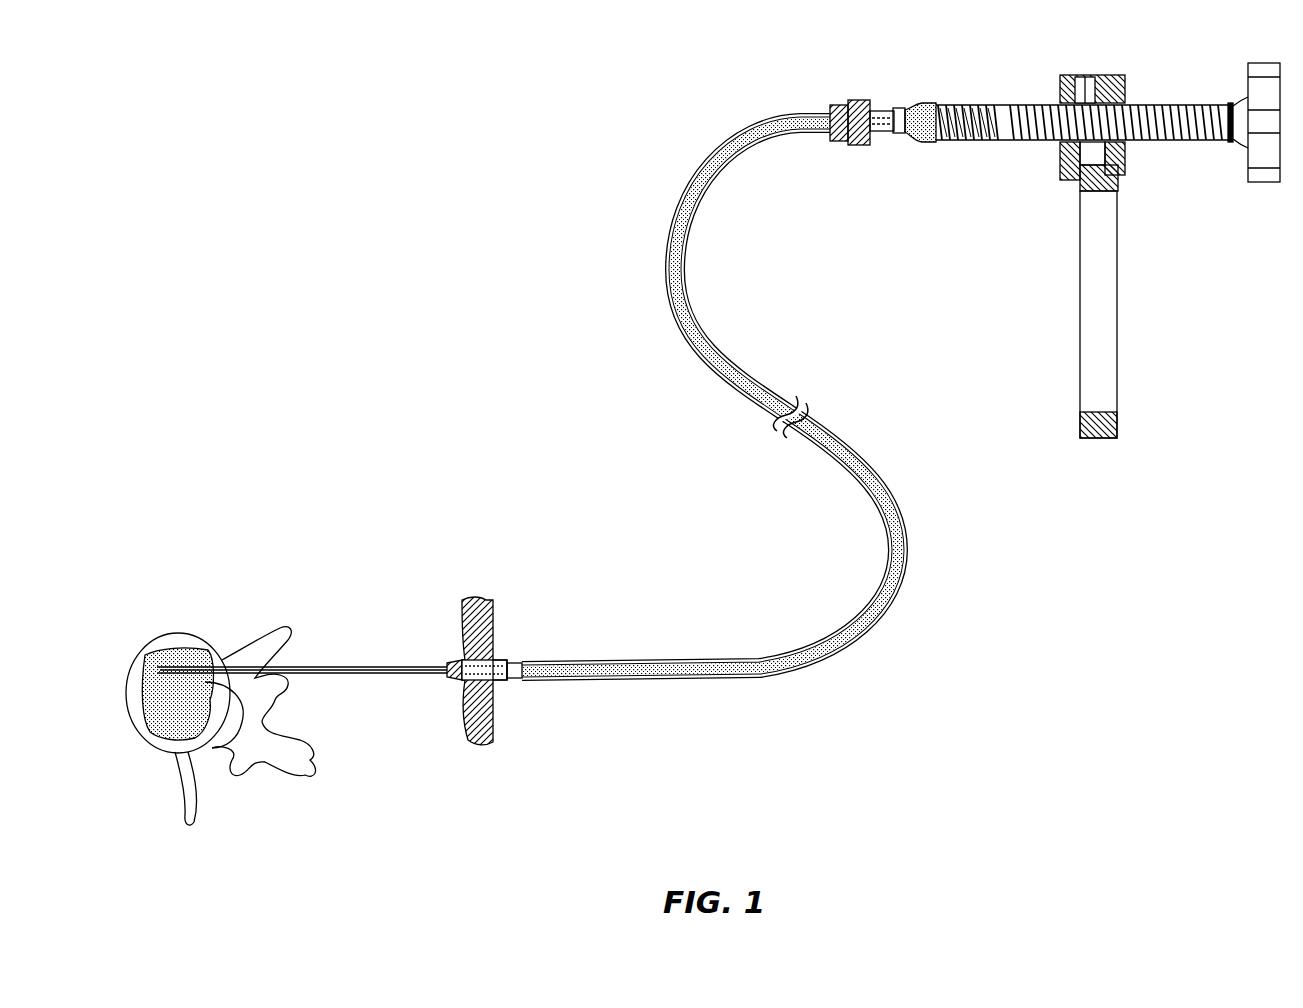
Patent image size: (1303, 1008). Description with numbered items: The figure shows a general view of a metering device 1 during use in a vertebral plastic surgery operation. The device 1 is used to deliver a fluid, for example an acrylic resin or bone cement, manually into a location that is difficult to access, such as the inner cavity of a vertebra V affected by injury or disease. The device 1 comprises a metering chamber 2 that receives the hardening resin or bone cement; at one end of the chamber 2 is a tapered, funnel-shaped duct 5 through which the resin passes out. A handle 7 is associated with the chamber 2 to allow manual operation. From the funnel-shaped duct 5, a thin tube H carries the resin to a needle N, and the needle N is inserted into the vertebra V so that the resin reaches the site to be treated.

The metering device 1 is at (1108, 68).
The metering chamber 2 is at (1016, 90).
The funnel-shaped duct 5 is at (858, 100).
The handle 7 is at (1068, 305).
The thin tube H is at (688, 285).
The needle N is at (401, 665).
The vertebra V is at (180, 633).